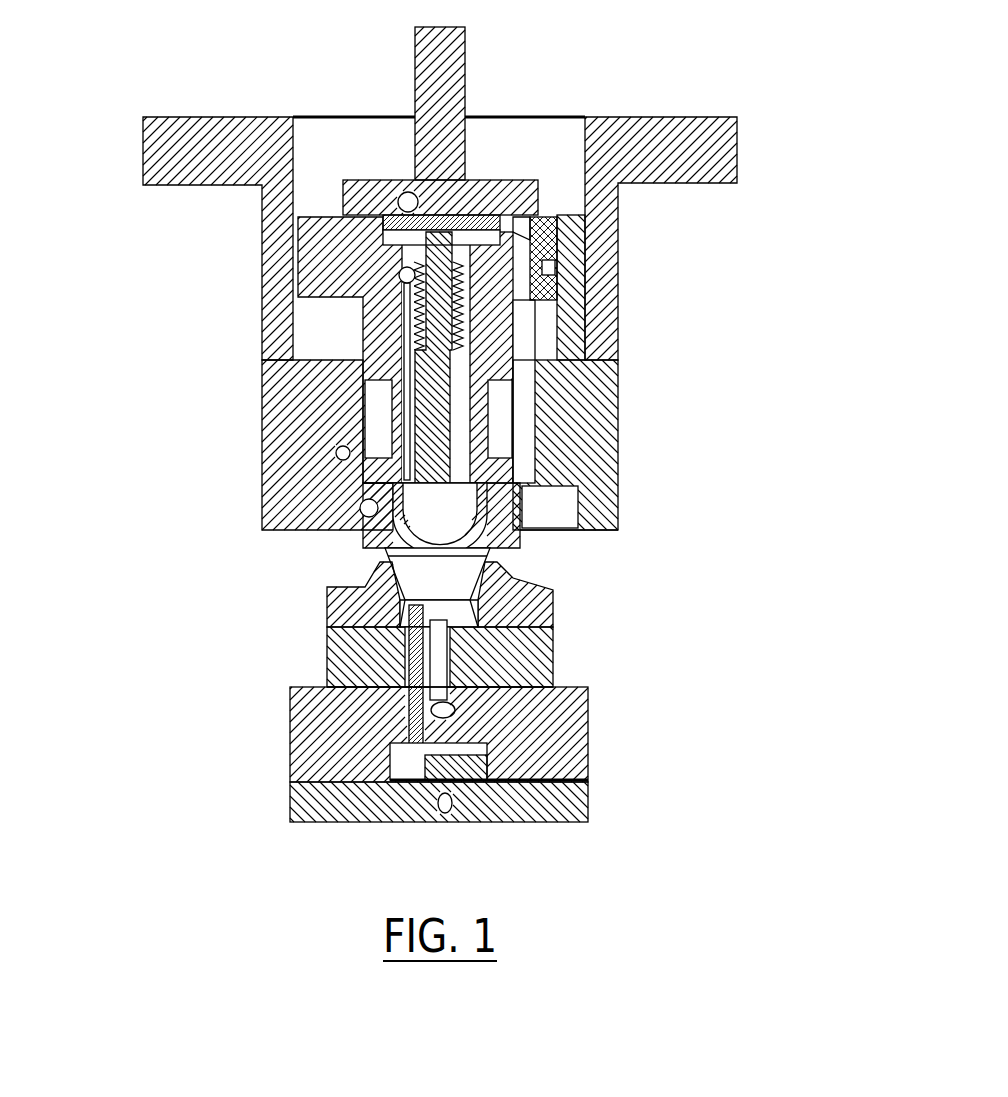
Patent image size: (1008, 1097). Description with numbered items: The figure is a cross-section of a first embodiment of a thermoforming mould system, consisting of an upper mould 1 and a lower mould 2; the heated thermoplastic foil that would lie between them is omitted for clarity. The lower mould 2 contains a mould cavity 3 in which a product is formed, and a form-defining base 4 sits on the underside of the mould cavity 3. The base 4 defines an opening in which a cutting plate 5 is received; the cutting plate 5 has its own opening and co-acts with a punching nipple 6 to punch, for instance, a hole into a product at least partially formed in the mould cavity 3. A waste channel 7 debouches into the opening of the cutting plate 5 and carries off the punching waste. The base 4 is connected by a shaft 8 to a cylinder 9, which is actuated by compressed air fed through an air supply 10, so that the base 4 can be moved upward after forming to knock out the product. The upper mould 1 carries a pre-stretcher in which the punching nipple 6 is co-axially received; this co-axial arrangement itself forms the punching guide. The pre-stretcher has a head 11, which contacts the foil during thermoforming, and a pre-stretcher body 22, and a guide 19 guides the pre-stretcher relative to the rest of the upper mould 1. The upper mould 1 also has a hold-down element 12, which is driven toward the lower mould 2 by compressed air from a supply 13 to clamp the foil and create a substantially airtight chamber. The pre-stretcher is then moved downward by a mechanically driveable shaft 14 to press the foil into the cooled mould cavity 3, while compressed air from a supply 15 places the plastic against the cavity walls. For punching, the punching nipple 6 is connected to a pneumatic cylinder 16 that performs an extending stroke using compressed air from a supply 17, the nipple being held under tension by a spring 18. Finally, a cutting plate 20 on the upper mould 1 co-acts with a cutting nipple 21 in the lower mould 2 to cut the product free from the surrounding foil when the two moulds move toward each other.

The upper mould 1 is at (800, 243).
The lower mould 2 is at (800, 663).
The mould cavity 3 is at (450, 578).
The base 4 is at (482, 612).
The cutting plate 5 is at (325, 628).
The punching nipple 6 is at (360, 508).
The waste channel 7 is at (470, 685).
The shaft 8 is at (403, 698).
The cylinder 9 is at (390, 743).
The air supply 10 is at (452, 800).
The head 11 is at (578, 483).
The hold-down element 12 is at (380, 540).
The supply 13 is at (337, 452).
The mechanically driveable shaft 14 is at (440, 77).
The supply 15 is at (399, 276).
The pneumatic cylinder 16 is at (398, 204).
The supply 17 is at (343, 183).
The spring 18 is at (452, 300).
The guide 19 is at (556, 383).
The cutting plate 20 is at (378, 562).
The cutting nipple 21 is at (340, 588).
The pre-stretcher body 22 is at (560, 208).